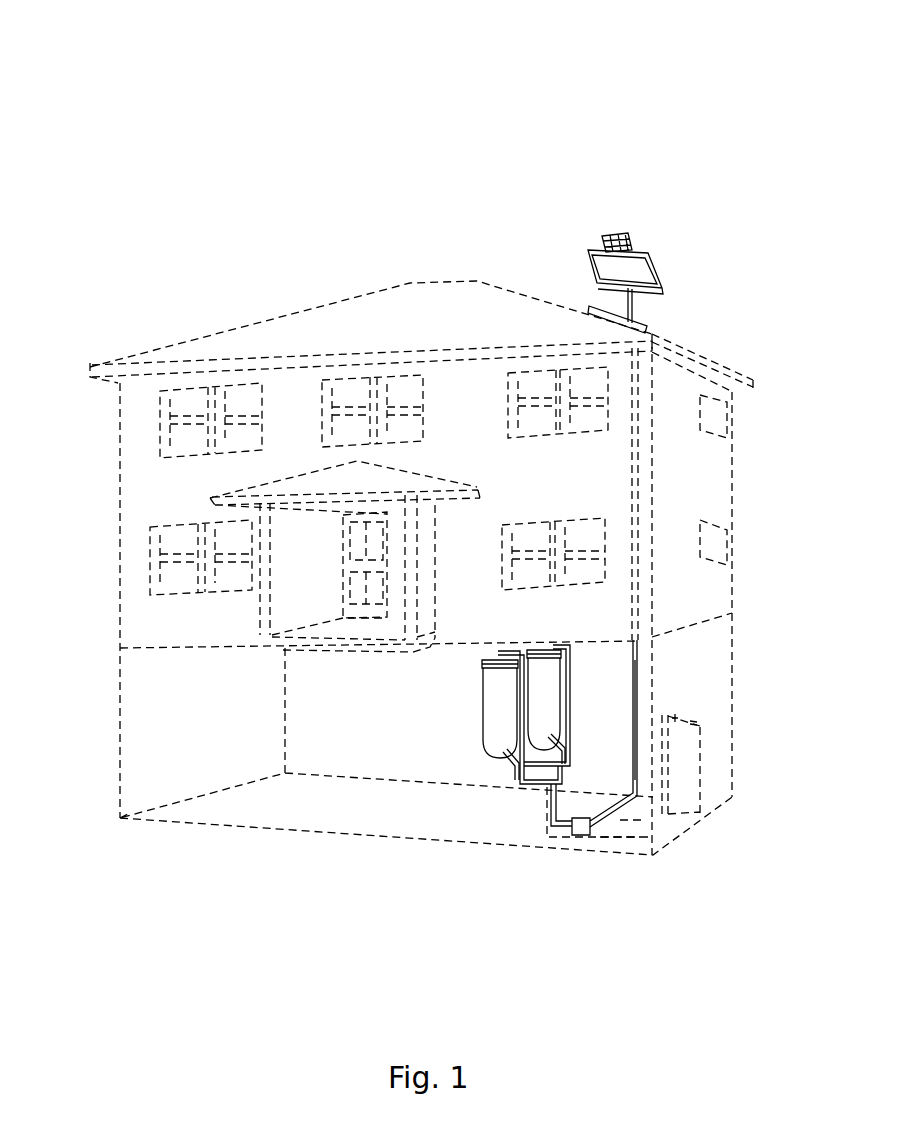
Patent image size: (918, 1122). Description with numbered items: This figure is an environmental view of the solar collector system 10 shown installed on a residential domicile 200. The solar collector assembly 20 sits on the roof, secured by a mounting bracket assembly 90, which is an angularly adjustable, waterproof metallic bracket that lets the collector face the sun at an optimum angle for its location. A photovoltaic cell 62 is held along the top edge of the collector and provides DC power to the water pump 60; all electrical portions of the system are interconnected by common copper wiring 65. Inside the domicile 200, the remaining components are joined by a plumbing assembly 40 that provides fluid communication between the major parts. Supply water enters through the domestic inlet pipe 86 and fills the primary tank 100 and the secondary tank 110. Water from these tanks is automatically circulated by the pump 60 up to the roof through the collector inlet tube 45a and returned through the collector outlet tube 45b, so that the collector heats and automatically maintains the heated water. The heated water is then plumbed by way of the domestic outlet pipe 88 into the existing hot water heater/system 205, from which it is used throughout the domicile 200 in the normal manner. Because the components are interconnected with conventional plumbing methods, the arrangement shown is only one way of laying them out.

The system 10 is at (103, 146).
The solar collector assembly 20 is at (668, 240).
The plumbing assembly 40 is at (521, 799).
The collector inlet tube 45a is at (637, 668).
The collector outlet tube 45b is at (637, 692).
The water pump 60 is at (578, 826).
The photovoltaic cell 62 is at (603, 238).
The copper wiring 65 is at (637, 708).
The domestic inlet pipe 86 is at (633, 828).
The domestic outlet pipe 88 is at (622, 838).
The mounting bracket assembly 90 is at (637, 307).
The primary tank 100 is at (493, 735).
The secondary tank 110 is at (540, 691).
The domicile 200 is at (320, 307).
The hot water heater/system 205 is at (700, 752).